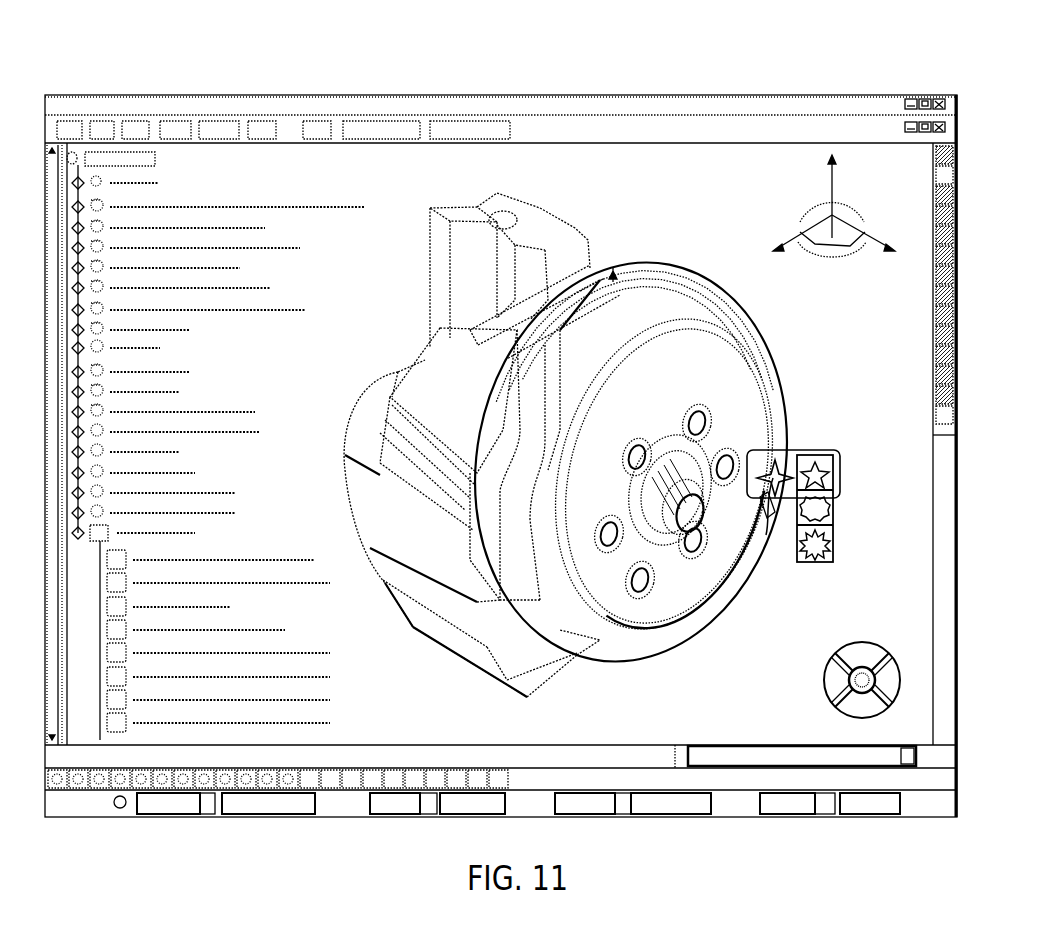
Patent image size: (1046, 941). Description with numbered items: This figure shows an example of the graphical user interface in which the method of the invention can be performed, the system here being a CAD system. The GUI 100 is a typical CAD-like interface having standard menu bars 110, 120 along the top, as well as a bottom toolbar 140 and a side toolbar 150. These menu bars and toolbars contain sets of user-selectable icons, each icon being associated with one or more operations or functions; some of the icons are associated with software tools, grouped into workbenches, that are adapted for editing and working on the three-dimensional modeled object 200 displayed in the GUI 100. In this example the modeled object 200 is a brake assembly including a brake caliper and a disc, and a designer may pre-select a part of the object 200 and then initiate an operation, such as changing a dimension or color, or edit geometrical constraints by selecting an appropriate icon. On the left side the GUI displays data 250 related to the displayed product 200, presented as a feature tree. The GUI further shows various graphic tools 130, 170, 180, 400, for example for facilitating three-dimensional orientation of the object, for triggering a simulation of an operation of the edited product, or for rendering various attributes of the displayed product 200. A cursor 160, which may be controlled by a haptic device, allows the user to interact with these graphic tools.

The GUI 100 is at (765, 667).
The menu bar 110 is at (611, 104).
The menu bar 120 is at (701, 134).
The graphic tool 130 is at (847, 251).
The bottom toolbar 140 is at (517, 750).
The side toolbar 150 is at (933, 432).
The cursor 160 is at (766, 535).
The graphic tool 170 is at (776, 458).
The graphic tool 180 is at (827, 516).
The 3D modeled object 200 is at (495, 550).
The data 250 is at (175, 427).
The graphic tool 400 is at (854, 645).